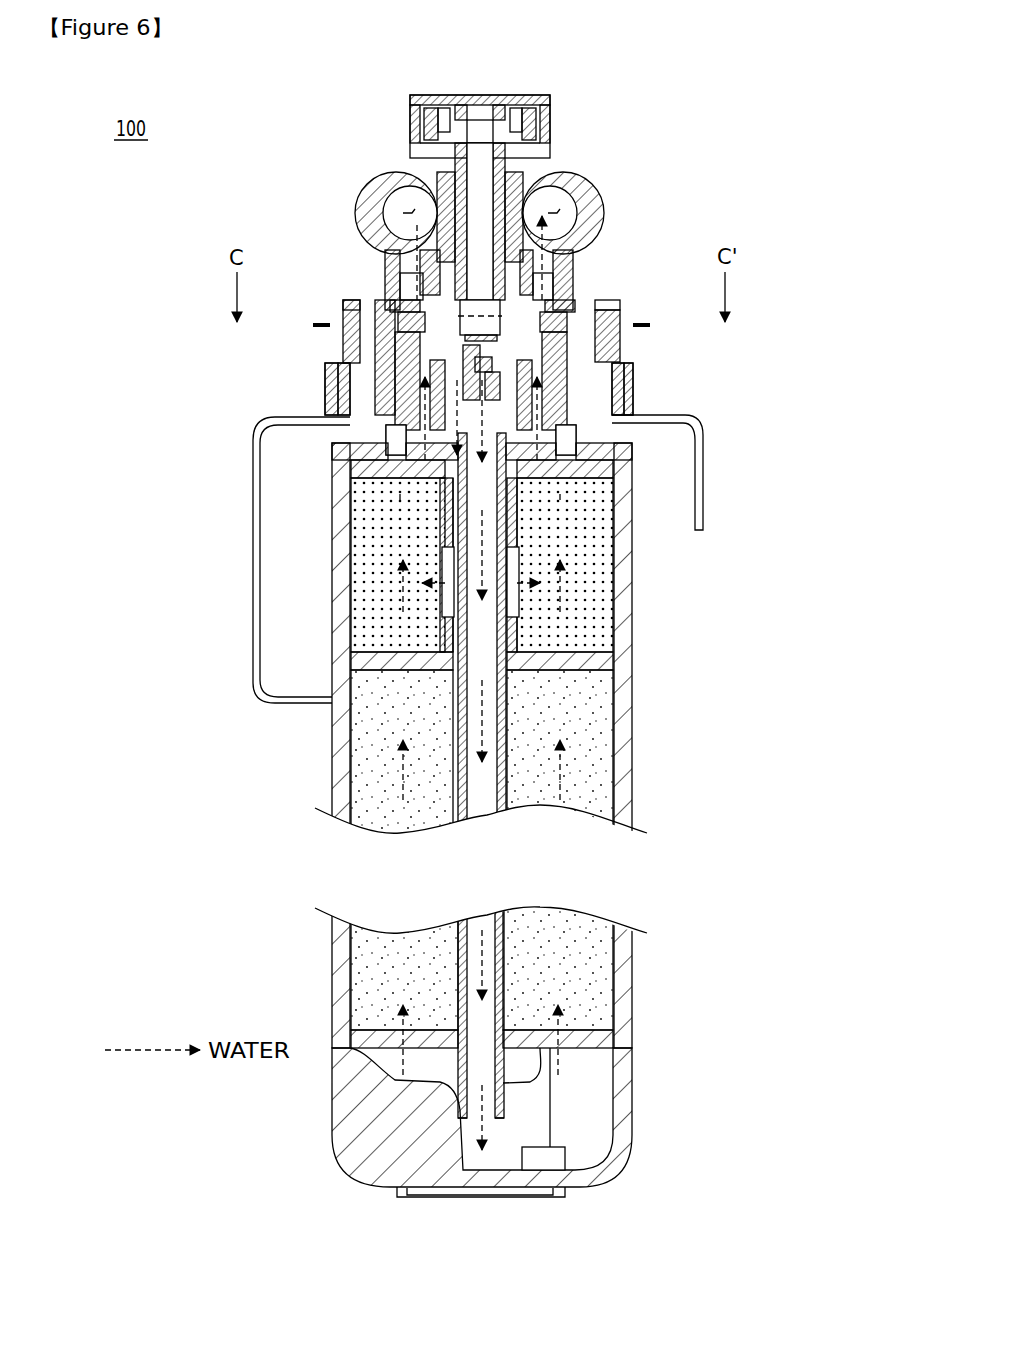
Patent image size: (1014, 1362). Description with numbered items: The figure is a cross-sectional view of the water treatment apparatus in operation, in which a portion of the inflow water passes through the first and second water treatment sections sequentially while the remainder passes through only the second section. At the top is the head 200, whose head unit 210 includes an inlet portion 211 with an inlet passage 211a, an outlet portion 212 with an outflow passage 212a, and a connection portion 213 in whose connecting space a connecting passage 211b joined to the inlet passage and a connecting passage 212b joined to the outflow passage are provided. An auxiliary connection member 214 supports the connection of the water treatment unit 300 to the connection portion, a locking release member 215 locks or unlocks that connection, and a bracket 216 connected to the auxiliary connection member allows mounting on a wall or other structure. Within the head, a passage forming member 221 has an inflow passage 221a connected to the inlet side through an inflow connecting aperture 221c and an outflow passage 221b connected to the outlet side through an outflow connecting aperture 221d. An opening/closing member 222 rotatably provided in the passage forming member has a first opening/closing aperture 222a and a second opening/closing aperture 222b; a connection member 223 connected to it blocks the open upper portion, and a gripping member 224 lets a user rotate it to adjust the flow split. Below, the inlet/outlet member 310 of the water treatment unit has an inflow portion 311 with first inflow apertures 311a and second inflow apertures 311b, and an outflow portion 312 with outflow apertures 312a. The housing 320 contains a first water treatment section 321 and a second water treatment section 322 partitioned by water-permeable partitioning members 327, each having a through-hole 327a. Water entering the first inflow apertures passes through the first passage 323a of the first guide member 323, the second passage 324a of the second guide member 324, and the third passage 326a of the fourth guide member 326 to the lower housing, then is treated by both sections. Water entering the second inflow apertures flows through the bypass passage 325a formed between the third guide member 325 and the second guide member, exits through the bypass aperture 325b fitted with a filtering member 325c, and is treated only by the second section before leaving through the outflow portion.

The head 200 is at (442, 385).
The head unit 210 is at (345, 223).
The inlet portion 211 is at (387, 180).
The inlet passage 211a is at (380, 160).
The connecting passage 211b is at (387, 227).
The outlet portion 212 is at (583, 190).
The outflow passage 212a is at (545, 178).
The connecting passage 212b is at (573, 213).
The connection portion 213 is at (637, 308).
The auxiliary connection member 214 is at (628, 382).
The locking release member 215 is at (627, 402).
The bracket 216 is at (253, 566).
The passage forming member 221 is at (583, 277).
The inflow passage 221a is at (388, 268).
The outflow passage 221b is at (577, 291).
The inflow connecting aperture 221c is at (377, 278).
The outflow connecting aperture 221d is at (590, 240).
The opening/closing member 222 is at (388, 296).
The first opening/closing aperture 222a is at (590, 307).
The second opening/closing aperture 222b is at (432, 320).
The connection member 223 is at (548, 158).
The gripping member 224 is at (527, 95).
The water treatment unit 300 is at (475, 739).
The inlet/outlet member 310 is at (448, 373).
The inflow portion 311 is at (378, 309).
The first inflow apertures 311a is at (577, 431).
The second inflow apertures 311b is at (442, 390).
The outflow portion 312 is at (600, 330).
The outflow apertures 312a is at (605, 350).
The housing 320 is at (475, 788).
The first water treatment section 321 is at (572, 735).
The second water treatment section 322 is at (632, 596).
The first guide member 323 is at (517, 498).
The first passage 323a is at (610, 470).
The second guide member 324 is at (577, 593).
The second passage 324a is at (517, 527).
The third guide member 325 is at (573, 593).
The bypass passage 325a is at (447, 537).
The bypass aperture 325b is at (447, 597).
The filtering member 325c is at (445, 632).
The fourth guide member 326 is at (504, 960).
The third passage 326a is at (488, 922).
The partitioning member 327 is at (610, 463).
The through-hole 327a is at (500, 1005).